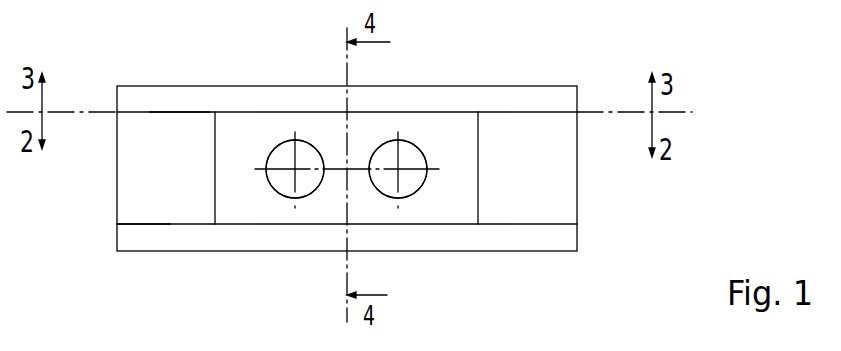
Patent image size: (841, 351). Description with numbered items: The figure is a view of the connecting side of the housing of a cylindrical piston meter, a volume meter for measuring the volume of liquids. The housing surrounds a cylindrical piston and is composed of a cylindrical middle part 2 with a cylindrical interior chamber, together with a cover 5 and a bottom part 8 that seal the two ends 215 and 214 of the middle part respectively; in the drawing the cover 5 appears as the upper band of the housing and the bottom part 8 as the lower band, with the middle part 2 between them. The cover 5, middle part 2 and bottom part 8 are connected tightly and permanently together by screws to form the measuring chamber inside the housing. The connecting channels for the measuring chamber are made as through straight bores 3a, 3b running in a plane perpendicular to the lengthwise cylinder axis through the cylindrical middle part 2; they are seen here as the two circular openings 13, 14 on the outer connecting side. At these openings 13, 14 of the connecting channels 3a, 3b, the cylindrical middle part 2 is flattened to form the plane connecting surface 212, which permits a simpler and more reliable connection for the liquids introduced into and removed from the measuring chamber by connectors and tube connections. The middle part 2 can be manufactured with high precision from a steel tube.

The cylindrical middle part 2 is at (565, 208).
The cover 5 is at (520, 92).
The bottom part 8 is at (507, 247).
The end of middle part 215 is at (175, 111).
The end of middle part 214 is at (132, 223).
The plane connecting surface 212 is at (238, 210).
The through straight bore 3a is at (285, 185).
The through straight bore 3b is at (416, 158).
The opening of connecting channel 13 is at (277, 146).
The opening of connecting channel 14 is at (400, 142).